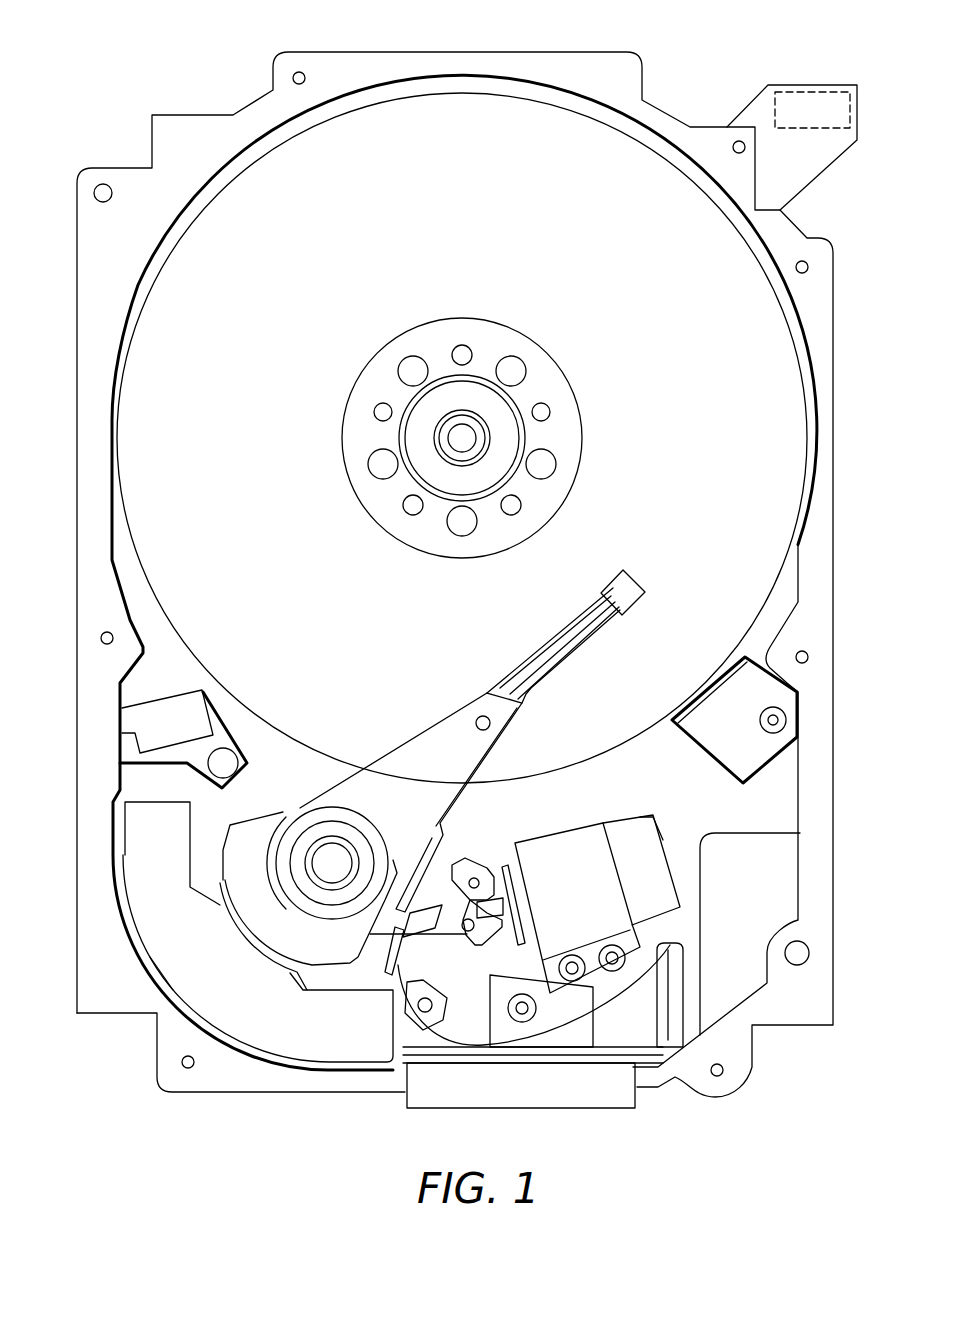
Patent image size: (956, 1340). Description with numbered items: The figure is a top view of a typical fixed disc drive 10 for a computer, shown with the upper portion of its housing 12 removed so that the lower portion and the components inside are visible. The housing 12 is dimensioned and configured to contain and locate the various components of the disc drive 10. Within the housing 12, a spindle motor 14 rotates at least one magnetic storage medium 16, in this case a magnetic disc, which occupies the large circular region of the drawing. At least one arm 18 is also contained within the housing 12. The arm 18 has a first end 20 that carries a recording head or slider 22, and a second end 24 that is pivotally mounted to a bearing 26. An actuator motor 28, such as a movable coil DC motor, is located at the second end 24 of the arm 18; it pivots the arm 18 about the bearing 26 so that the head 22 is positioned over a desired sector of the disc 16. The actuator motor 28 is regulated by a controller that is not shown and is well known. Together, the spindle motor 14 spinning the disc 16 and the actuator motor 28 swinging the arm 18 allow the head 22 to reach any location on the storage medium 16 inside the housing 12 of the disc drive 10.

The fixed disc drive 10 is at (128, 102).
The housing 12 is at (597, 63).
The spindle motor 14 is at (455, 444).
The magnetic storage medium 16 is at (374, 232).
The arm 18 is at (447, 738).
The first end 20 is at (565, 622).
The recording head or slider 22 is at (633, 585).
The second end 24 is at (357, 800).
The bearing 26 is at (323, 852).
The actuator motor 28 is at (224, 985).